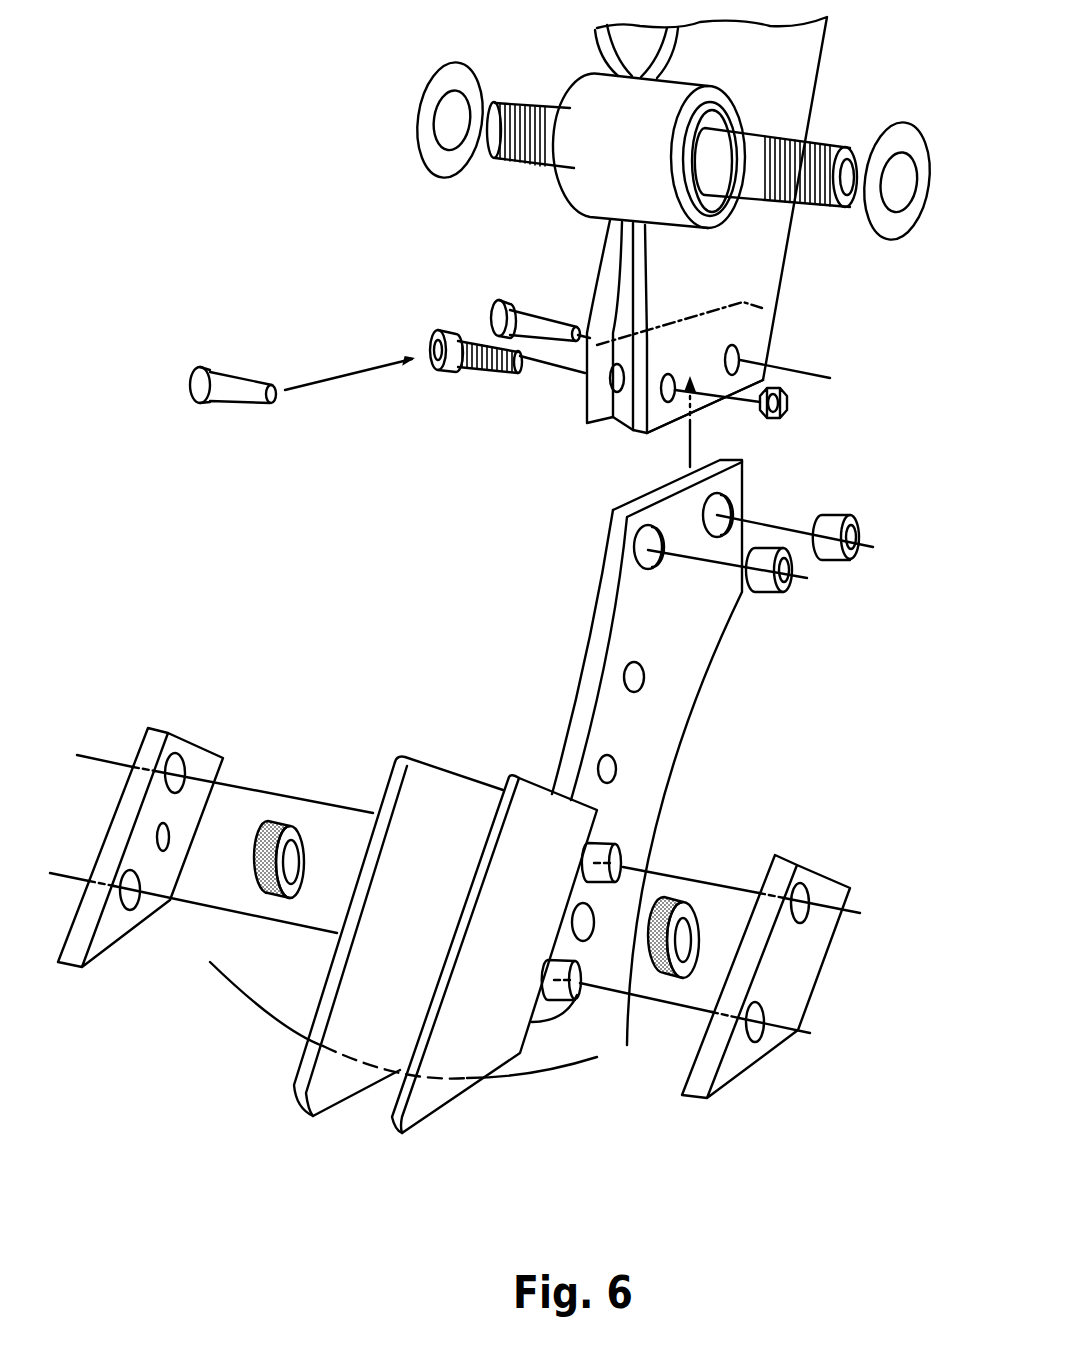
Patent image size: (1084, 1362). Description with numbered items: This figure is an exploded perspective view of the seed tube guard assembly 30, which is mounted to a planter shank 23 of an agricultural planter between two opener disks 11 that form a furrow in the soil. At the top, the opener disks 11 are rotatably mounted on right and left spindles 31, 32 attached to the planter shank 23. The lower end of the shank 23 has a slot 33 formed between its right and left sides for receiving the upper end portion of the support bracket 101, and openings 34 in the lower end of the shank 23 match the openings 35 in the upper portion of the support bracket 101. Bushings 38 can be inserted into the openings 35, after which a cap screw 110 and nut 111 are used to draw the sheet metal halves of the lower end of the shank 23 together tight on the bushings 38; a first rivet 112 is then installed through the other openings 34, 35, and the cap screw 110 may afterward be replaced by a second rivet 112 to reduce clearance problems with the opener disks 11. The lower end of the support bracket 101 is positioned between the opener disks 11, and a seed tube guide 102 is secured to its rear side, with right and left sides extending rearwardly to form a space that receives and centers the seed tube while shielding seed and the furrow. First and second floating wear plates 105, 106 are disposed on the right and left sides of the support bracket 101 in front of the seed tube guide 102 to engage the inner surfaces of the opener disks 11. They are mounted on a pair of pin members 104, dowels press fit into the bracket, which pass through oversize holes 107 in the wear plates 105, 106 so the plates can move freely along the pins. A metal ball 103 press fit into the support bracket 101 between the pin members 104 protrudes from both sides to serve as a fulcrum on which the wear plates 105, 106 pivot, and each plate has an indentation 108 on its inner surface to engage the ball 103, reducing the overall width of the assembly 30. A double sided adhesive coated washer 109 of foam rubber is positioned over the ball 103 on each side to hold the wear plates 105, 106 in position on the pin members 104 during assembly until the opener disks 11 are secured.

The opener disks 11 is at (258, 1005).
The planter shank 23 is at (785, 267).
The seed tube guard assembly 30 is at (805, 712).
The right spindle 31 is at (750, 147).
The left spindle 32 is at (568, 114).
The slot 33 is at (620, 425).
The openings 34 is at (738, 355).
The openings 35 is at (633, 535).
The bushings 38 is at (790, 577).
The support bracket 101 is at (592, 637).
The seed tube guide 102 is at (430, 767).
The metal ball 103 is at (593, 917).
The pin members 104 is at (577, 1000).
The first floating wear plate 105 is at (820, 980).
The second floating wear plate 106 is at (167, 728).
The oversize holes 107 is at (757, 1032).
The indentation 108 is at (160, 852).
The adhesive coated washer 109 is at (282, 817).
The cap screw 110 is at (472, 363).
The nut 111 is at (787, 412).
The rivet 112 is at (537, 310).